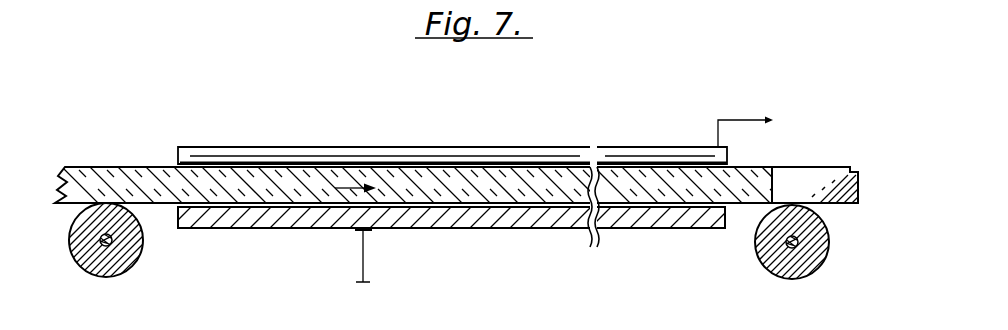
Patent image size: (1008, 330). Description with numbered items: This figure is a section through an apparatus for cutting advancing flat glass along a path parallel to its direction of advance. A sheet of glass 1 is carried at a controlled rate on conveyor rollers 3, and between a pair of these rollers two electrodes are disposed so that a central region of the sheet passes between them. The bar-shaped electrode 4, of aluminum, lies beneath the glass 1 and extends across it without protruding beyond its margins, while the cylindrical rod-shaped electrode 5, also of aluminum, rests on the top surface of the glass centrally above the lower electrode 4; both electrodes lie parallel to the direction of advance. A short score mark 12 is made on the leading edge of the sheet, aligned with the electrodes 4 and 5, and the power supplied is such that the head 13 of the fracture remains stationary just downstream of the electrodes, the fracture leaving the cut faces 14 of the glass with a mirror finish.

The glass 1 is at (687, 170).
The conveyor rollers 3 is at (122, 270).
The bar-shaped electrode 4 is at (617, 222).
The rod-shaped electrode 5 is at (362, 152).
The short score mark 12 is at (852, 166).
The head of the fracture 13 is at (773, 177).
The cut faces 14 is at (277, 180).